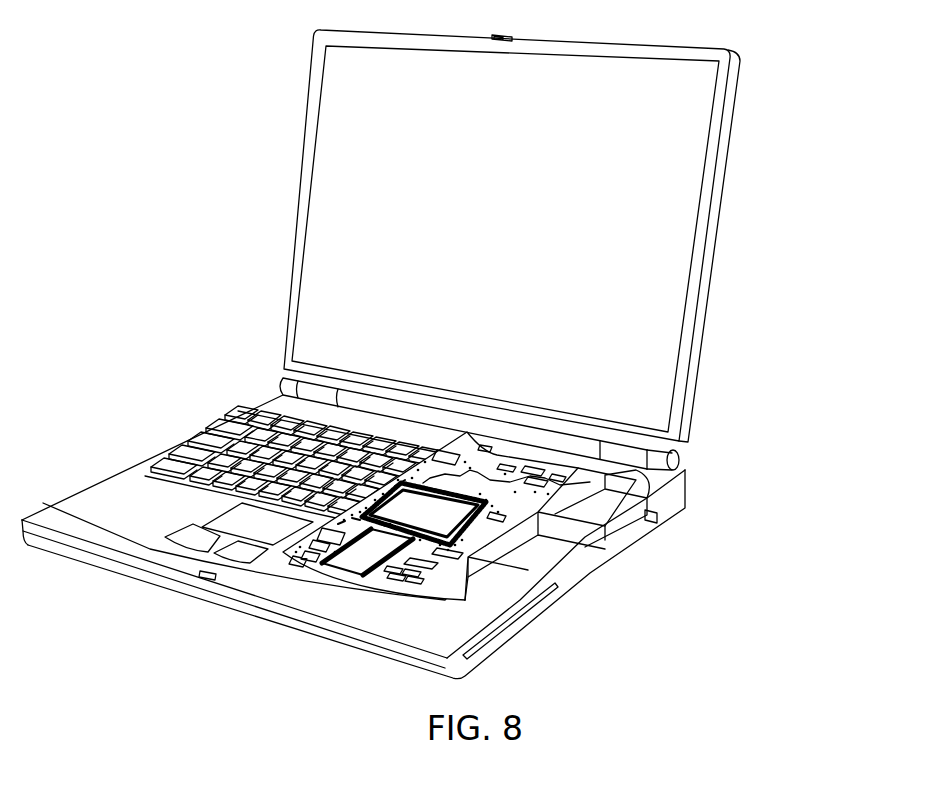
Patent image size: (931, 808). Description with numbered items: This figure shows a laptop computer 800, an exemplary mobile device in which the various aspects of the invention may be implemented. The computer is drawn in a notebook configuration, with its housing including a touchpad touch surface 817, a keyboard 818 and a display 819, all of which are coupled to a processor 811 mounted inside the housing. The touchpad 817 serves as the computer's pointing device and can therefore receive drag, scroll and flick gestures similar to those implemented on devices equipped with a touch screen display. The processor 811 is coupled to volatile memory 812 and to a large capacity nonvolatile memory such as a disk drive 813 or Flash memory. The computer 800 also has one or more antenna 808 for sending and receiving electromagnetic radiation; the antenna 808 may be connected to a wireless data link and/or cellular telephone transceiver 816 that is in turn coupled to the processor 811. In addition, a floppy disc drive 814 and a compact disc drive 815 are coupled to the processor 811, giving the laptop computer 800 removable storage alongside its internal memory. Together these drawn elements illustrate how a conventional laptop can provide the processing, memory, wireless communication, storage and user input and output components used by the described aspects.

The laptop computer 800 is at (421, 354).
The antenna 808 is at (523, 517).
The processor 811 is at (406, 523).
The volatile memory 812 is at (358, 555).
The disk drive 813 is at (473, 593).
The floppy disc drive 814 is at (498, 518).
The compact disc (CD) drive 815 is at (593, 502).
The cellular telephone transceiver 816 is at (505, 522).
The touchpad touch surface 817 is at (230, 525).
The keyboard 818 is at (185, 450).
The display 819 is at (678, 387).